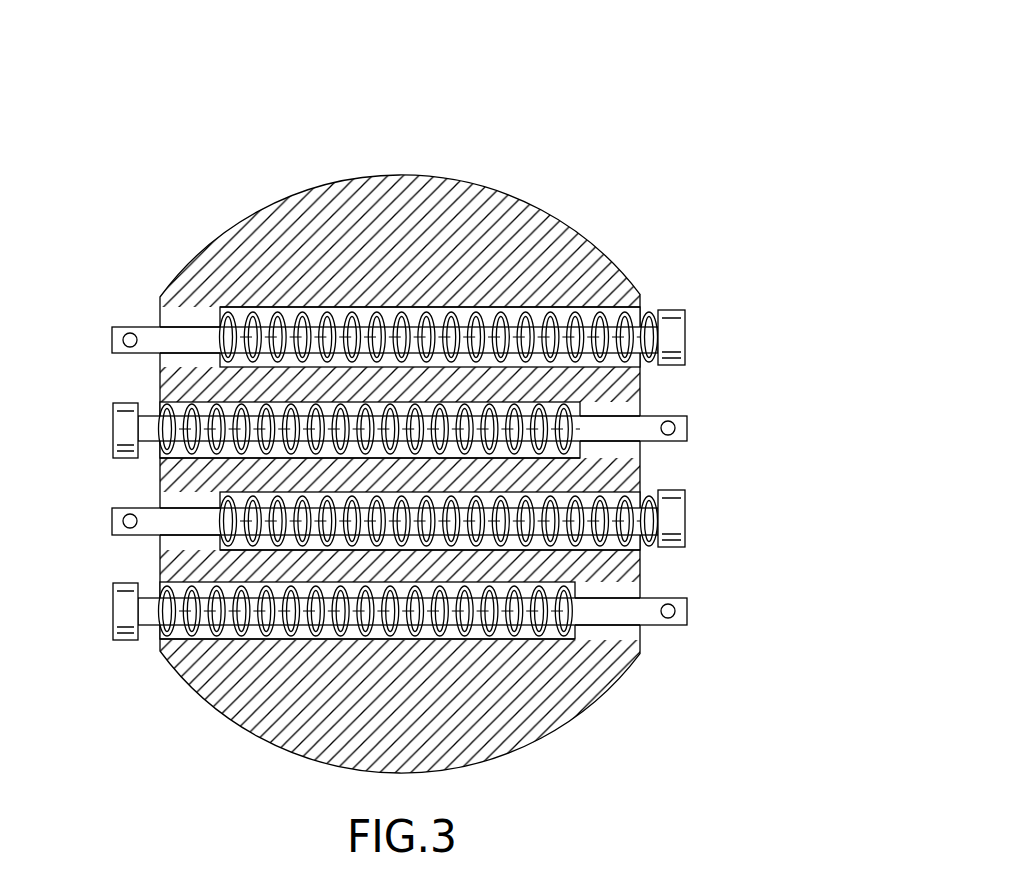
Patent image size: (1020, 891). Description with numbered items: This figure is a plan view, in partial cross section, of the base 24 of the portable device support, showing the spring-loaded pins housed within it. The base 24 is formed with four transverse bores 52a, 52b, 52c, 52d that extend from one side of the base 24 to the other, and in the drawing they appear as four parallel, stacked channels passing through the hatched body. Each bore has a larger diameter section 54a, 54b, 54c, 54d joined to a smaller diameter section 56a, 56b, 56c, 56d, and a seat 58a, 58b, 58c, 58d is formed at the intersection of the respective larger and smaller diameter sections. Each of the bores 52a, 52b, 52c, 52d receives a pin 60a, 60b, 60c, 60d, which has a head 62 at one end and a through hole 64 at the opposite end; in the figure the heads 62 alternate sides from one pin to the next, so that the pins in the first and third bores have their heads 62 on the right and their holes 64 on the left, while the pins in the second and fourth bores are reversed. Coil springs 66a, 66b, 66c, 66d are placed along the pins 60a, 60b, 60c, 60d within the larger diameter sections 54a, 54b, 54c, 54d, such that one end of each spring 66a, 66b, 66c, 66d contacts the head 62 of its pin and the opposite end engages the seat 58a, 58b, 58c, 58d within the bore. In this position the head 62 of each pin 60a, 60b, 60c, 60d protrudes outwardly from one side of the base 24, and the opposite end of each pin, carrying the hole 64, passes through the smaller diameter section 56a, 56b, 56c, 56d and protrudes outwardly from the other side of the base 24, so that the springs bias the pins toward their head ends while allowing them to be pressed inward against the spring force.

The base 24 is at (613, 133).
The transverse bore 52a is at (409, 290).
The transverse bore 52b is at (156, 390).
The transverse bore 52c is at (652, 553).
The transverse bore 52d is at (168, 650).
The larger diameter section 54a is at (305, 310).
The larger diameter section 54b is at (160, 478).
The larger diameter section 54c is at (596, 549).
The larger diameter section 54d is at (238, 640).
The smaller diameter section 56a is at (195, 318).
The smaller diameter section 56b is at (640, 396).
The smaller diameter section 56c is at (160, 539).
The smaller diameter section 56d is at (615, 636).
The seat 58a is at (238, 310).
The seat 58b is at (600, 400).
The seat 58c is at (220, 548).
The seat 58d is at (567, 636).
The pin 60a is at (545, 338).
The pin 60b is at (690, 427).
The pin 60c is at (110, 507).
The pin 60d is at (305, 613).
The head 62 is at (680, 311).
The through hole 64 is at (128, 334).
The coil spring 66a is at (472, 318).
The coil spring 66b is at (545, 447).
The coil spring 66c is at (644, 497).
The coil spring 66d is at (470, 626).